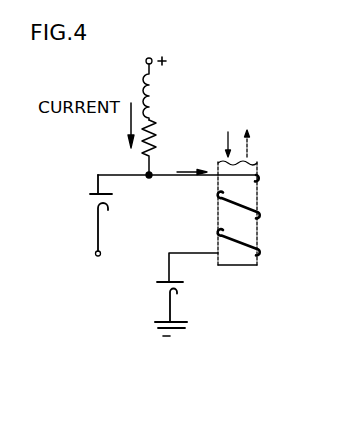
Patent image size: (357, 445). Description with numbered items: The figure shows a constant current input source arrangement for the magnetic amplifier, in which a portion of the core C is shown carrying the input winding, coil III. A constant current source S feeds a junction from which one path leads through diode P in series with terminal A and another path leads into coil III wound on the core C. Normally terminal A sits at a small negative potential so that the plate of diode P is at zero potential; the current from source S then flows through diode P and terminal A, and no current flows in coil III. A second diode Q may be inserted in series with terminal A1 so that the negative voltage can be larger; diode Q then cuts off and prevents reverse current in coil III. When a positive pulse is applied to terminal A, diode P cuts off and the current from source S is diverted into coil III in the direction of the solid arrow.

The constant current source S is at (149, 61).
The diode P is at (97, 213).
The terminal A is at (96, 264).
The diode Q is at (168, 302).
The terminal A1 is at (171, 341).
The core C is at (242, 263).
The coil III is at (297, 220).